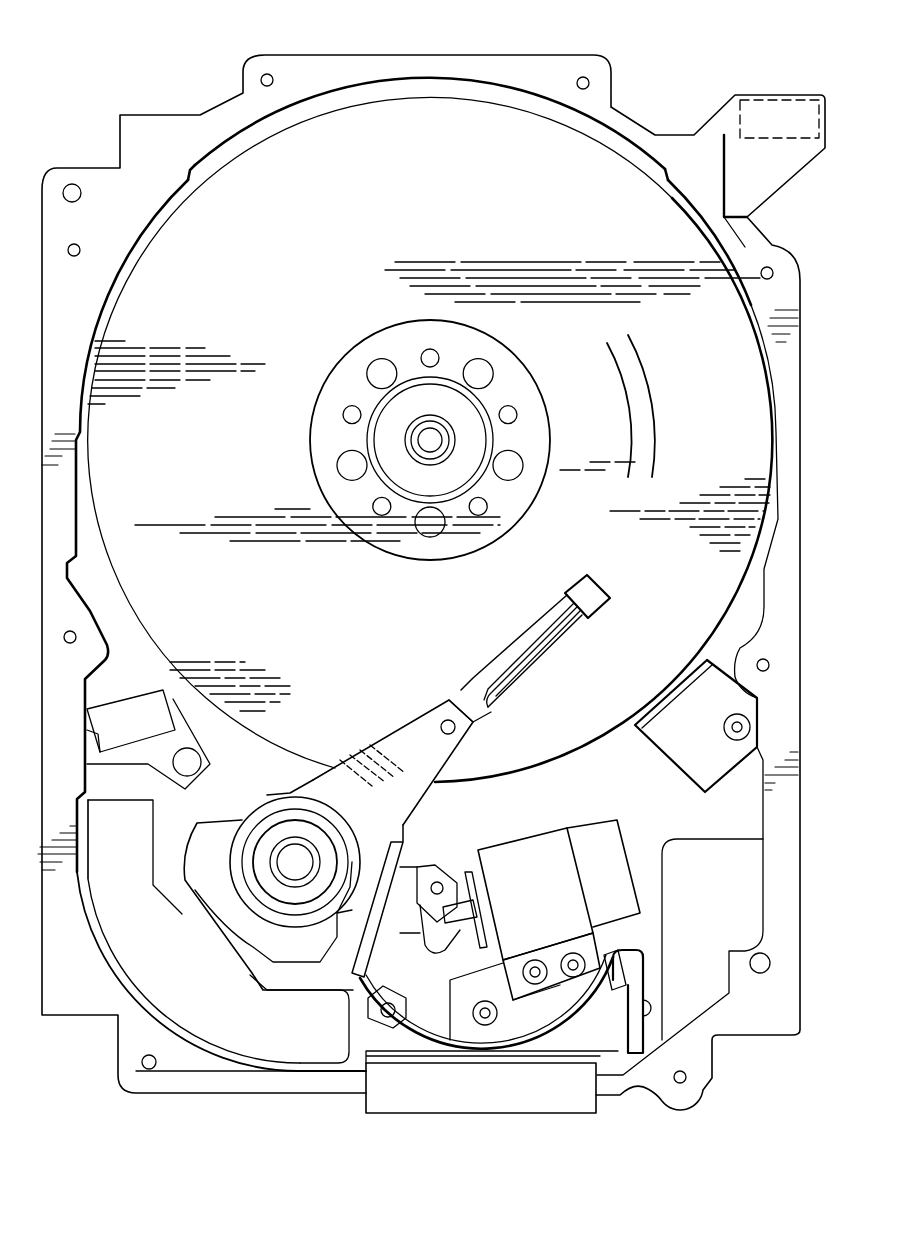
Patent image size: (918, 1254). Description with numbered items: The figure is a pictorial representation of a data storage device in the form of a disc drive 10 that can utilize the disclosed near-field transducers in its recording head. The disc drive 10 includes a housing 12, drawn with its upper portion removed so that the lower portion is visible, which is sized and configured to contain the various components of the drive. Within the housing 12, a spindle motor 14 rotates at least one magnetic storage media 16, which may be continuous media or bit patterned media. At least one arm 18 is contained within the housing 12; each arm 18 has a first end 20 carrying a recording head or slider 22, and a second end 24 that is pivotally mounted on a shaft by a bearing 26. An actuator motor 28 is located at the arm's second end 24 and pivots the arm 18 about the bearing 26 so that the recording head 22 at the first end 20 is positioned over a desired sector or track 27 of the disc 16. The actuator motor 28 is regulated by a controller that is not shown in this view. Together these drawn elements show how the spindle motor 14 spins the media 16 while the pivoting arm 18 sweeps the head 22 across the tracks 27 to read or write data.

The disc drive 10 is at (98, 104).
The housing 12 is at (563, 70).
The spindle motor 14 is at (419, 443).
The magnetic storage media 16 is at (315, 233).
The arm 18 is at (413, 742).
The first end 20 is at (533, 627).
The recording head 22 is at (597, 592).
The second end 24 is at (319, 802).
The bearing 26 is at (283, 852).
The track 27 is at (640, 416).
The actuator motor 28 is at (158, 984).